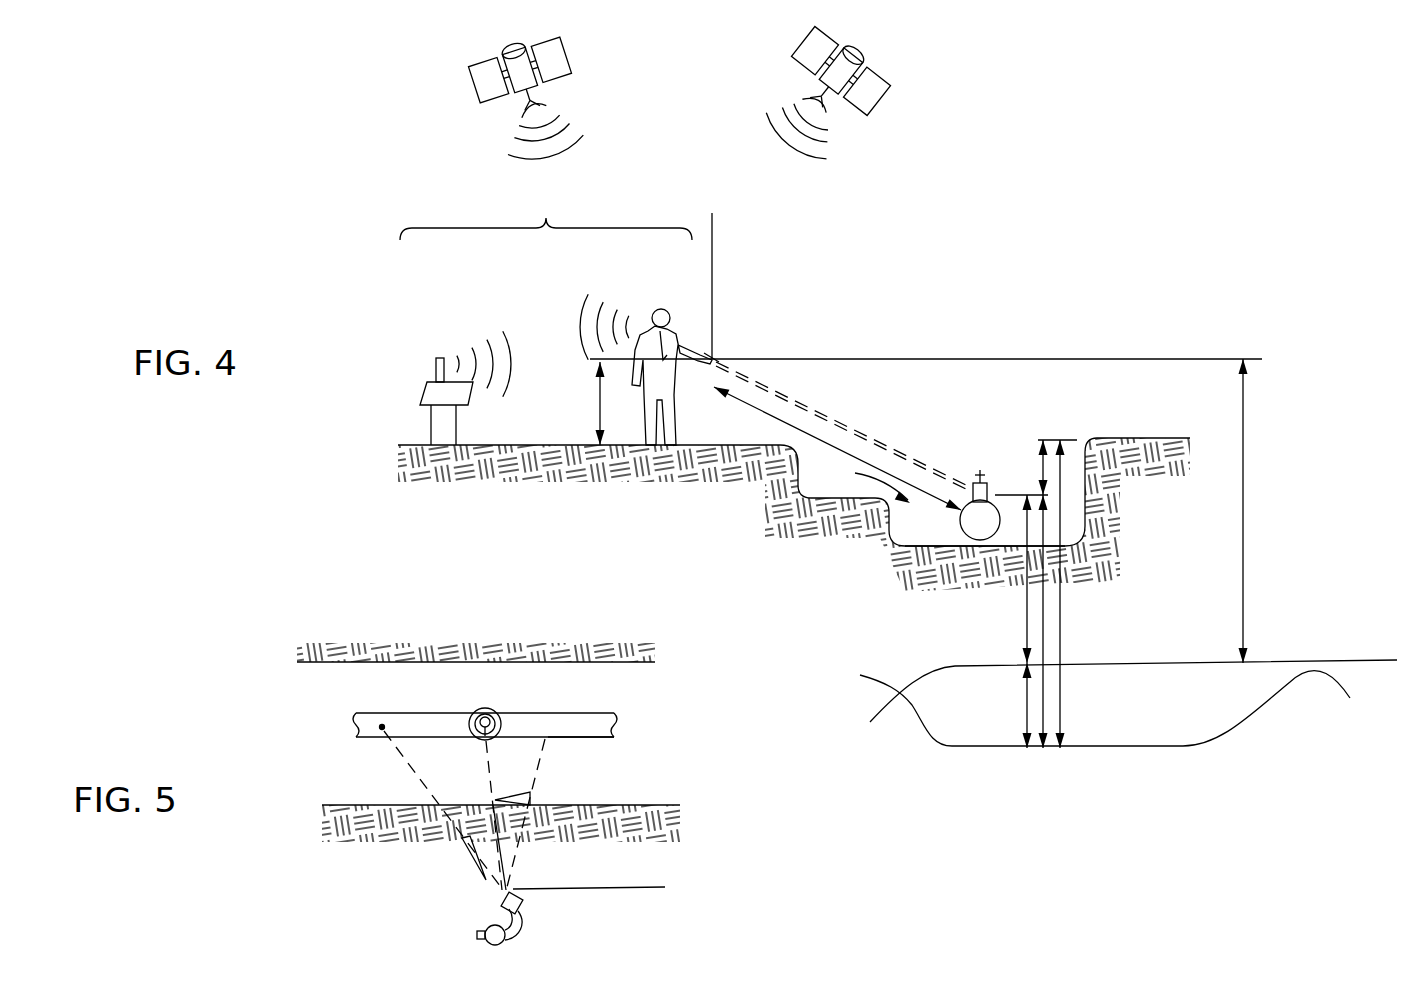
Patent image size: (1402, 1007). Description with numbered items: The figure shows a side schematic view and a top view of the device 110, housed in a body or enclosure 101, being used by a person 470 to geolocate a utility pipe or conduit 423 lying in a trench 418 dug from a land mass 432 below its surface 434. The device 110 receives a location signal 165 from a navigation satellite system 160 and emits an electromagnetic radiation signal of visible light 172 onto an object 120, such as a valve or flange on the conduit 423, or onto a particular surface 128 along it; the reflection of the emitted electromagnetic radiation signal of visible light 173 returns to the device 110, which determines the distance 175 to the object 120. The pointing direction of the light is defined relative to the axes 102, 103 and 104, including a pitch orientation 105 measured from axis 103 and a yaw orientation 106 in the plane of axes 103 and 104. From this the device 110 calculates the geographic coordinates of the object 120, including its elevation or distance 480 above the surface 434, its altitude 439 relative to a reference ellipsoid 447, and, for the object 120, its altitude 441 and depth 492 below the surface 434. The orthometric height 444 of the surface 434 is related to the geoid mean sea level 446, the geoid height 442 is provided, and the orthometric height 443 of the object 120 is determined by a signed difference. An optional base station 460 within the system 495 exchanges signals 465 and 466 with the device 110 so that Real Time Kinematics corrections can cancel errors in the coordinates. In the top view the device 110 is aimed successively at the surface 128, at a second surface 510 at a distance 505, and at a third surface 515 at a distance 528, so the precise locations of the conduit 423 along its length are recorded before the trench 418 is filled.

In FIG. 4, the navigation satellite system 160 is at (562, 46).
In FIG. 4, the location signal 165 is at (576, 133).
In FIG. 4, the system 495 is at (546, 209).
In FIG. 4, the signal 466 is at (577, 307).
In FIG. 4, the person 470 is at (665, 308).
In FIG. 5, the person 470 is at (477, 936).
In FIG. 4, the signal 465 is at (477, 347).
In FIG. 4, the base station 460 is at (420, 389).
In FIG. 4, the elevation or distance 480 is at (598, 401).
In FIG. 4, the axis 102 is at (713, 230).
In FIG. 4, the body or enclosure 101 is at (749, 320).
In FIG. 4, the device 110 is at (723, 360).
In FIG. 5, the device 110 is at (523, 902).
In FIG. 4, the pitch orientation or pitch angle 105 is at (842, 400).
In FIG. 4, the axis 103 is at (982, 357).
In FIG. 5, the axis 103 is at (504, 862).
In FIG. 4, the electromagnetic radiation signal of visible light 172 is at (850, 429).
In FIG. 4, the reflection of the emitted electromagnetic radiation signal of visible light 173 is at (901, 454).
In FIG. 4, the surface 128 is at (968, 494).
In FIG. 5, the surface 128 is at (478, 738).
In FIG. 4, the object 120 is at (965, 472).
In FIG. 5, the object 120 is at (505, 733).
In FIG. 4, the depth 492 is at (1040, 468).
In FIG. 4, the surface 434 is at (794, 482).
In FIG. 5, the surface 434 is at (456, 770).
In FIG. 4, the trench 418 is at (731, 495).
In FIG. 5, the trench 418 is at (456, 770).
In FIG. 4, the distance 175 is at (830, 445).
In FIG. 5, the distance 175 is at (492, 787).
In FIG. 4, the land mass 432 is at (1162, 468).
In FIG. 5, the land mass 432 is at (355, 840).
In FIG. 4, the altitude 439 is at (1243, 513).
In FIG. 4, the conduit 423 is at (909, 585).
In FIG. 5, the conduit 423 is at (475, 723).
In FIG. 4, the altitude 441 is at (1025, 625).
In FIG. 4, the geoid height 442 is at (1025, 706).
In FIG. 4, the orthometric height 443 is at (1044, 607).
In FIG. 4, the orthometric height 444 is at (1062, 637).
In FIG. 4, the reference ellipsoid 447 is at (1196, 666).
In FIG. 4, the geoid mean sea level 446 is at (1374, 660).
In FIG. 5, the third surface 515 is at (380, 730).
In FIG. 5, the distance 528 is at (413, 775).
In FIG. 5, the distance 505 is at (538, 770).
In FIG. 5, the second surface 510 is at (548, 737).
In FIG. 5, the yaw orientation or yaw angle 106 is at (521, 793).
In FIG. 5, the axis 104 is at (633, 882).